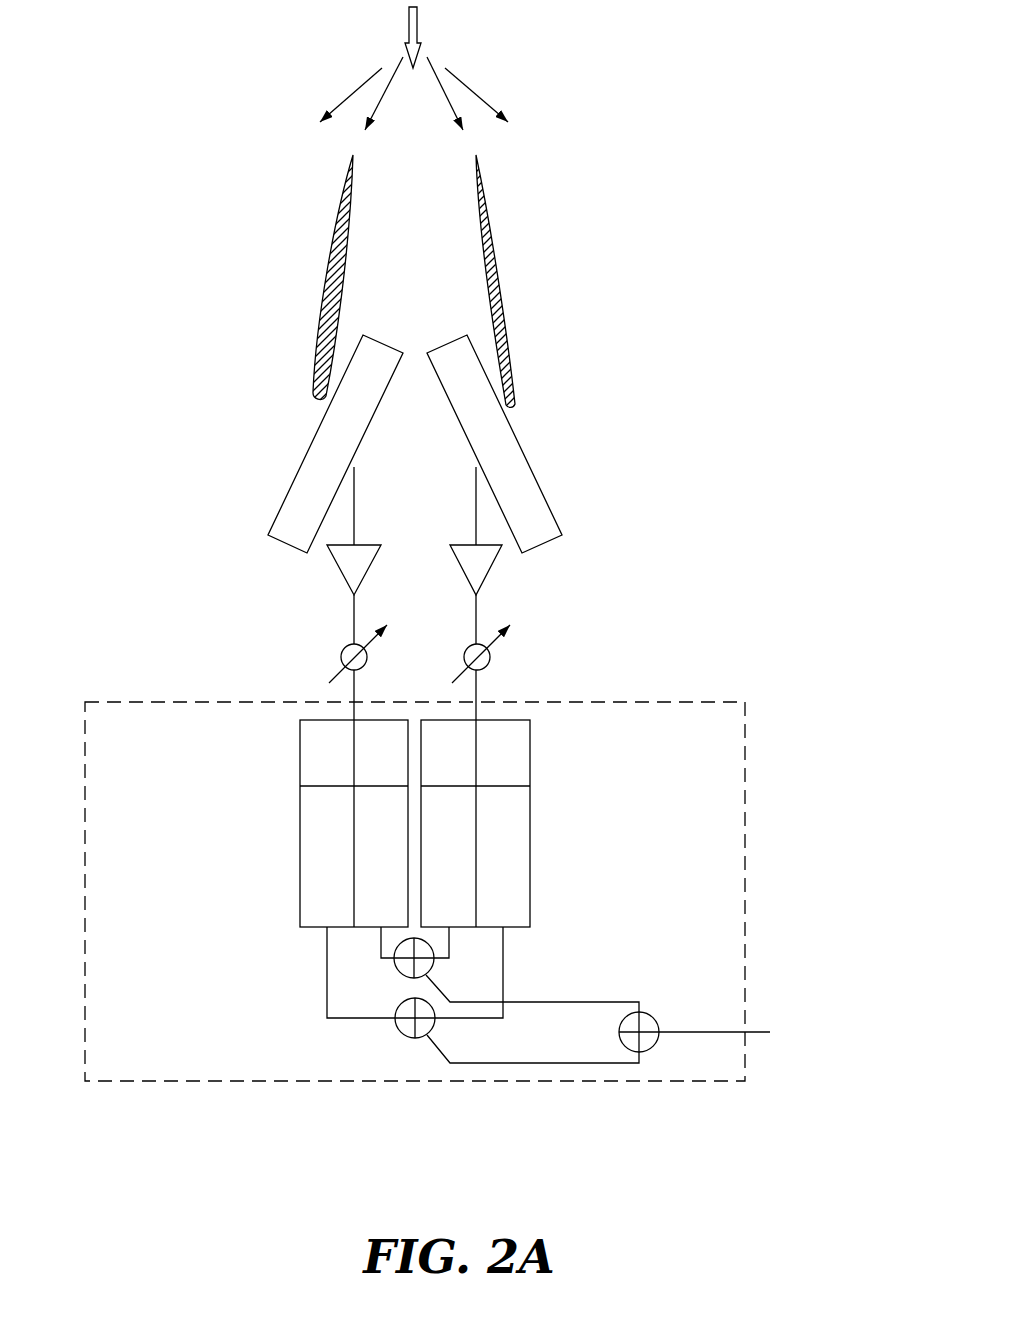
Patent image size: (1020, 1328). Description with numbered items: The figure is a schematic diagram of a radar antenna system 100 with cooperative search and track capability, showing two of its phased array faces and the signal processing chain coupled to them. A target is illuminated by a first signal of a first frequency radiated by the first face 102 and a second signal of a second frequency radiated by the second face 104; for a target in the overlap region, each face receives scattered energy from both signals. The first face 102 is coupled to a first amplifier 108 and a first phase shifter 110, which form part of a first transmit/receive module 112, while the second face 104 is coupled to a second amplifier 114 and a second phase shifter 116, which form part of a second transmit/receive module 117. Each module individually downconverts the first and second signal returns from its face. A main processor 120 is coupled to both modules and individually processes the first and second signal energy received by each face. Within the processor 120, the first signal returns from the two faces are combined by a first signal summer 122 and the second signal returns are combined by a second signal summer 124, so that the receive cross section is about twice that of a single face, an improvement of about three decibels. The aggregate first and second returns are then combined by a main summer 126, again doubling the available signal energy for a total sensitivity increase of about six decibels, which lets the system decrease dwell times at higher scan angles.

The antenna system 100 is at (612, 358).
The first face 102 is at (285, 493).
The second face 104 is at (545, 493).
The first amplifier 108 is at (338, 572).
The first phase shifter 110 is at (340, 657).
The transmit/receive module 112 is at (396, 634).
The second amplifier 114 is at (490, 572).
The second phase shifter 116 is at (491, 657).
The second transmit/receive module 117 is at (519, 634).
The main processor 120 is at (133, 767).
The first signal summer 122 is at (400, 1030).
The second signal summer 124 is at (398, 976).
The main summer 126 is at (653, 1018).